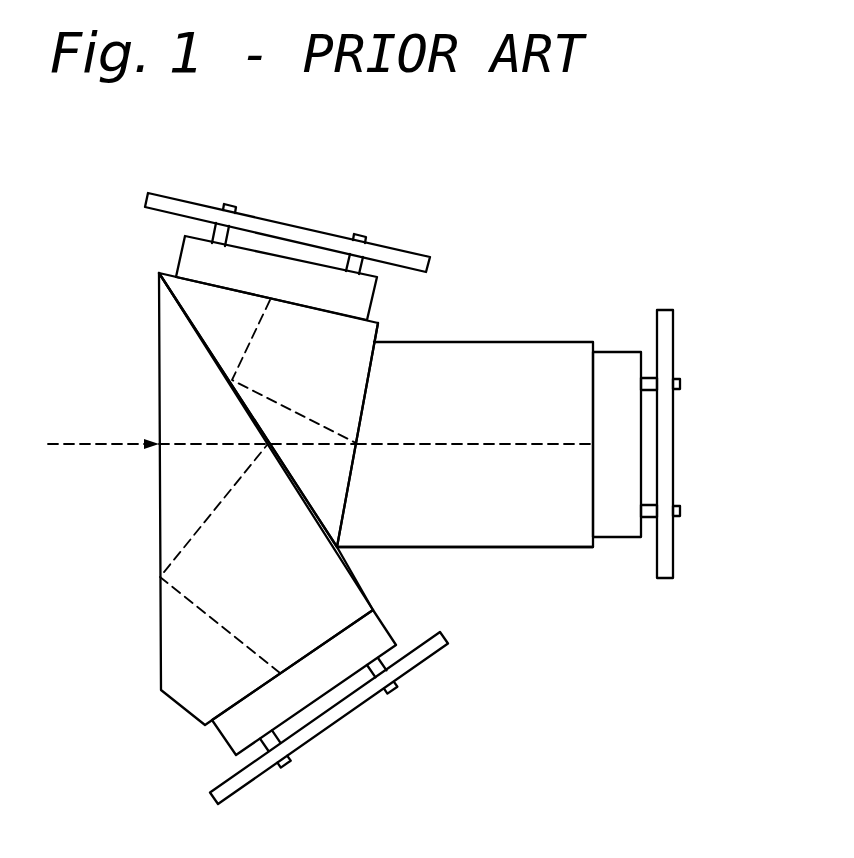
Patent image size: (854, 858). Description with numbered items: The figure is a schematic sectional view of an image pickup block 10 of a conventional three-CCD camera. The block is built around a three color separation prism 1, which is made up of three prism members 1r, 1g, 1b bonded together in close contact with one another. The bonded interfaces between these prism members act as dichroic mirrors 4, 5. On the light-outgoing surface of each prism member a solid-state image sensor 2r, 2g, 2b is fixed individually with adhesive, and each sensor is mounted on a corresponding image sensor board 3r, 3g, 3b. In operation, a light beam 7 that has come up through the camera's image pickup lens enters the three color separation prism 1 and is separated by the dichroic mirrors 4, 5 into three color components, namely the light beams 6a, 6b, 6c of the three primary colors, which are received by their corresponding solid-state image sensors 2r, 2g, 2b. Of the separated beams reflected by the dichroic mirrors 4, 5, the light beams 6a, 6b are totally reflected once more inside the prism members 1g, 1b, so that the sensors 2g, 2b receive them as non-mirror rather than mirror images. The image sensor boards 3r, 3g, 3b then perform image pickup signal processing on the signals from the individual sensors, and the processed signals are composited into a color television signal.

The three color separation prism 1 is at (406, 556).
The prism member 1b is at (220, 318).
The prism member 1g is at (200, 663).
The prism member 1r is at (523, 368).
The solid-state image sensor 2b is at (195, 257).
The solid-state image sensor 2g is at (233, 723).
The solid-state image sensor 2r is at (620, 517).
The image sensor board 3b is at (296, 230).
The image sensor board 3g is at (338, 730).
The image sensor board 3r is at (677, 466).
The dichroic mirror 4 is at (205, 357).
The dichroic mirror 5 is at (372, 381).
The light beam 6a is at (193, 603).
The light beam 6b is at (255, 330).
The light beam 6c is at (455, 446).
The light beam 7 is at (78, 447).
The image pickup block 10 is at (640, 209).